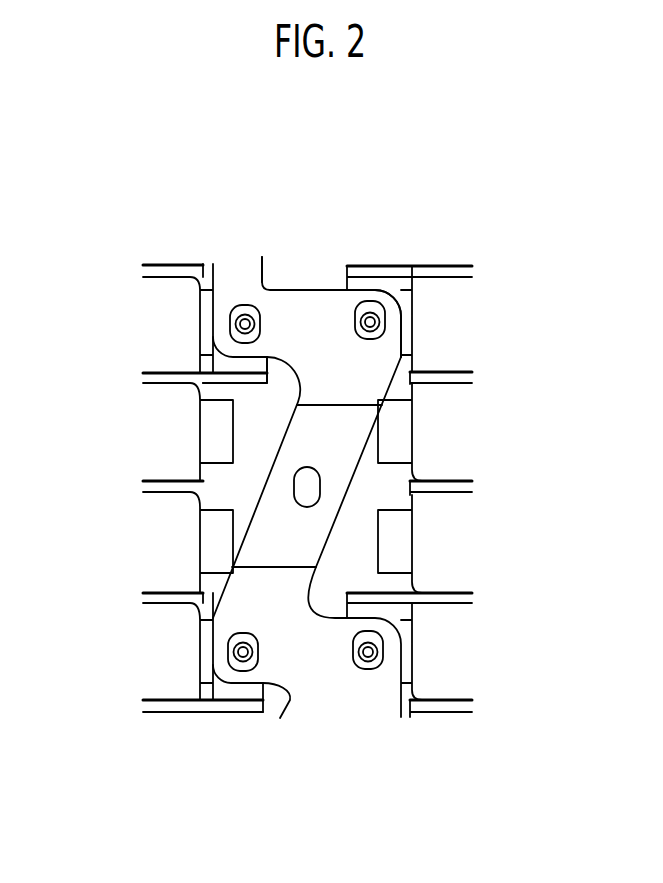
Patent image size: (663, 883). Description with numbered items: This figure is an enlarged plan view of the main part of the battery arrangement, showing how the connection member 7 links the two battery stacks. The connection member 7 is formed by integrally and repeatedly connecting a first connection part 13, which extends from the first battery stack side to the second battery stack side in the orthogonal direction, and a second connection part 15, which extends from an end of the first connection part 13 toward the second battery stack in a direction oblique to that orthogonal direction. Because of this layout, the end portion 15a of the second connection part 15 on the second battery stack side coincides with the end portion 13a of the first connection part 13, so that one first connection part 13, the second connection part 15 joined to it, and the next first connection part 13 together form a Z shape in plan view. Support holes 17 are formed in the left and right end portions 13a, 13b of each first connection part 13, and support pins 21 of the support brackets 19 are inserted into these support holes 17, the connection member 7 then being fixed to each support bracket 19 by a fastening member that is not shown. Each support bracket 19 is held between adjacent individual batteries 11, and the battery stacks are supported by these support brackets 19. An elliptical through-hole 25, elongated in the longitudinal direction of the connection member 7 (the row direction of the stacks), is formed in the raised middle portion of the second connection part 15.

The connection member 7 is at (263, 264).
The battery 11 is at (165, 284).
The first connection part 13 is at (312, 312).
The end portion of the first connection part 13a is at (222, 320).
The end portion of the first connection part 13b is at (393, 327).
The second connection part 15 is at (335, 433).
The end portion of the second connection part 15a is at (222, 655).
The support hole 17 is at (385, 313).
The support bracket 19 is at (243, 380).
The support pin 21 is at (240, 307).
The through-hole 25 is at (322, 486).